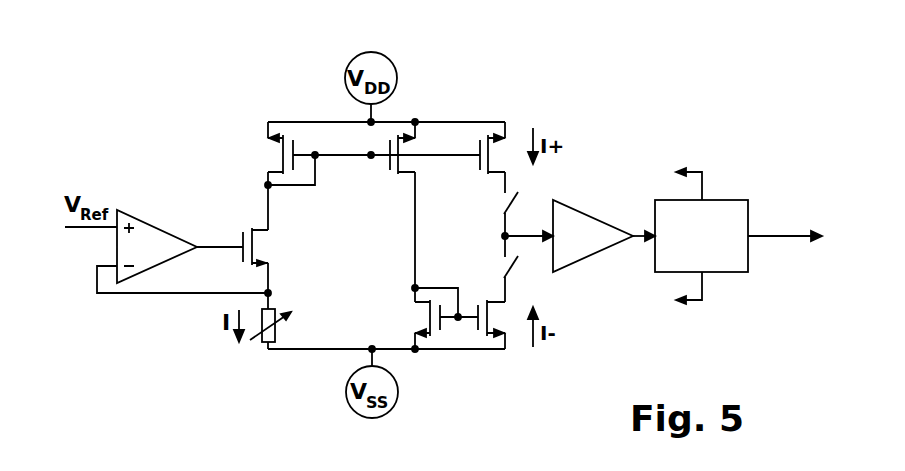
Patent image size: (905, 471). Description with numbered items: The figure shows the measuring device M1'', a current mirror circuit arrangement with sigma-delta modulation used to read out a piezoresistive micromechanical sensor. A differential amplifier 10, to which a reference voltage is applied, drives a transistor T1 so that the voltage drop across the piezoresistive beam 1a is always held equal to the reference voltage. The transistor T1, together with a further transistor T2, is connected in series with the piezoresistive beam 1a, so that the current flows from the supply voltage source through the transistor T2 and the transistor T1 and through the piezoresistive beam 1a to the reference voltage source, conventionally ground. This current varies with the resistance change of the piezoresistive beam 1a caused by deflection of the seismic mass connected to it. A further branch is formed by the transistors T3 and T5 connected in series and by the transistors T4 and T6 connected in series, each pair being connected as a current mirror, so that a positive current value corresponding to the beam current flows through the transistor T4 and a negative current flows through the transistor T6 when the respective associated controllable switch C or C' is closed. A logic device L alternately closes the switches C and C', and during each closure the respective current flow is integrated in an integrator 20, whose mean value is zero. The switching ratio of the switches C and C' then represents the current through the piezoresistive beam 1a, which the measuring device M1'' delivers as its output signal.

The differential amplifier 10 is at (157, 229).
The piezoresistive beam 1a is at (278, 330).
The transistor T1 is at (246, 235).
The further transistor T2 is at (290, 139).
The transistor T3 is at (390, 171).
The transistor T4 is at (480, 139).
The transistor T5 is at (428, 313).
The transistor T6 is at (470, 336).
The controllable switch C is at (488, 204).
The controllable switch C' is at (488, 269).
The integrator 20 is at (612, 220).
The logic device L is at (748, 265).
The measuring device M1'' is at (626, 54).